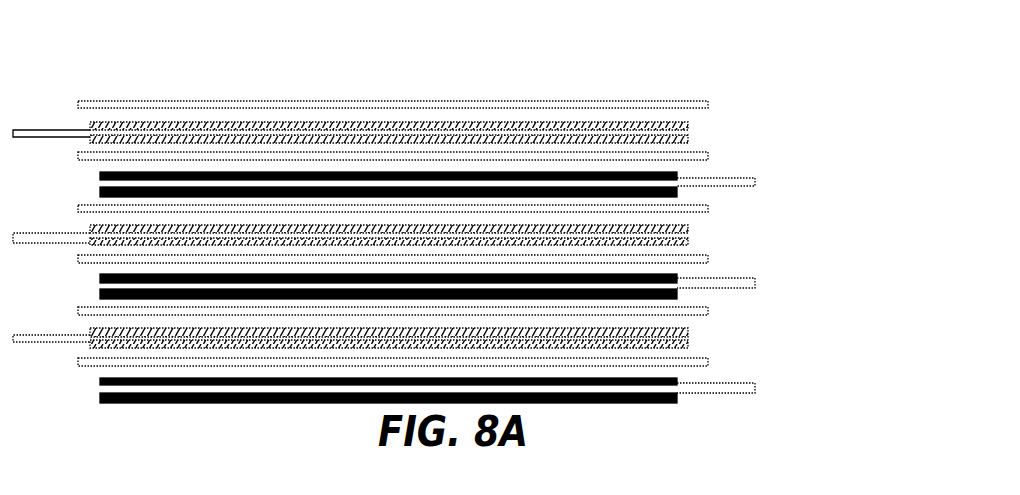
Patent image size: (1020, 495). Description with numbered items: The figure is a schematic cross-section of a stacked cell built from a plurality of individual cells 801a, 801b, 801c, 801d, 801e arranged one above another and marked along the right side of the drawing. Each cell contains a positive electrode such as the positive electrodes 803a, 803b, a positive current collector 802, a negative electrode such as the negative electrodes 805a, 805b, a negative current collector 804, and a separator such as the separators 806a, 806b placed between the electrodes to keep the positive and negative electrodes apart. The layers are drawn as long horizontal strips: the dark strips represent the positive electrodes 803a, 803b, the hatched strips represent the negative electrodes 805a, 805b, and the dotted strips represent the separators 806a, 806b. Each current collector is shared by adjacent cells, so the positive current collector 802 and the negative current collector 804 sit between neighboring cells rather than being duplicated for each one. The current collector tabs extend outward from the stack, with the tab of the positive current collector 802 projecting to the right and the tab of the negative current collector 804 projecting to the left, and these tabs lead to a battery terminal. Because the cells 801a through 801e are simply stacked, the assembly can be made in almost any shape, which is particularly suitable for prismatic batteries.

The cell 801a is at (771, 130).
The cell 801b is at (771, 184).
The cell 801c is at (771, 235).
The cell 801d is at (771, 287).
The cell 801e is at (771, 339).
The positive current collector 802 is at (728, 178).
The positive electrode 803a is at (620, 172).
The positive electrode 803b is at (533, 187).
The negative current collector 804 is at (45, 129).
The negative electrode 805a is at (140, 137).
The negative electrode 805b is at (230, 123).
The separator 806a is at (453, 107).
The separator 806b is at (387, 152).